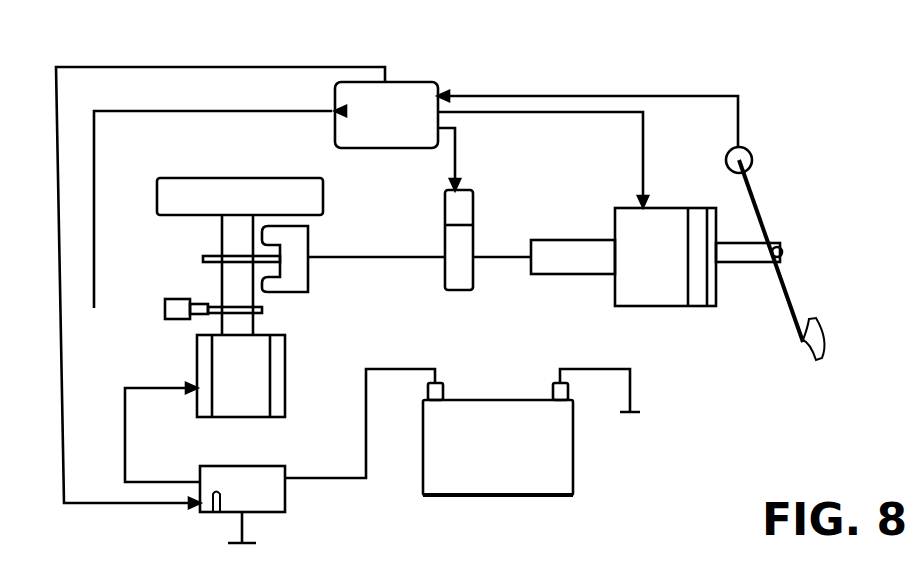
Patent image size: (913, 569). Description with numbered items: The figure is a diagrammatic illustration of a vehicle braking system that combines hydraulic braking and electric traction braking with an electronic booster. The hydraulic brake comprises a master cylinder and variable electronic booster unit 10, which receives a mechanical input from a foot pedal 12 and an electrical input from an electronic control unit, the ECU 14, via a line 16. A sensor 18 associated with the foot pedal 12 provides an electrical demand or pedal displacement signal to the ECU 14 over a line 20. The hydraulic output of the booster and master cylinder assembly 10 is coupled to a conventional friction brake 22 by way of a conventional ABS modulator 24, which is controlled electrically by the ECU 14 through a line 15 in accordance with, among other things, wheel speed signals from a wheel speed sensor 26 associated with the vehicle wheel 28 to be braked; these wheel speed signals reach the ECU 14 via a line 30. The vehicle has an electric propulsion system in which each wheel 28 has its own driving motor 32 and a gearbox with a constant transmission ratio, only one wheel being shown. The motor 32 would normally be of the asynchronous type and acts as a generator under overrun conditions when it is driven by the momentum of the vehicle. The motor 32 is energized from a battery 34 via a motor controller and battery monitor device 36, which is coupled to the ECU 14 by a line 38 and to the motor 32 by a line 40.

The master cylinder and variable electronic booster unit 10 is at (670, 309).
The foot pedal 12 is at (795, 297).
The electronic control unit 14 is at (412, 85).
The line 15 is at (456, 155).
The line 16 is at (643, 158).
The sensor 18 is at (758, 166).
The line 20 is at (710, 95).
The friction brake 22 is at (316, 248).
The ABS modulator 24 is at (479, 276).
The wheel speed sensor 26 is at (178, 290).
The vehicle wheel 28 is at (214, 175).
The line 30 is at (140, 112).
The driving motor 32 is at (264, 424).
The battery 34 is at (553, 470).
The motor controller and battery monitor device 36 is at (283, 520).
The line 38 is at (64, 428).
The line 40 is at (126, 458).